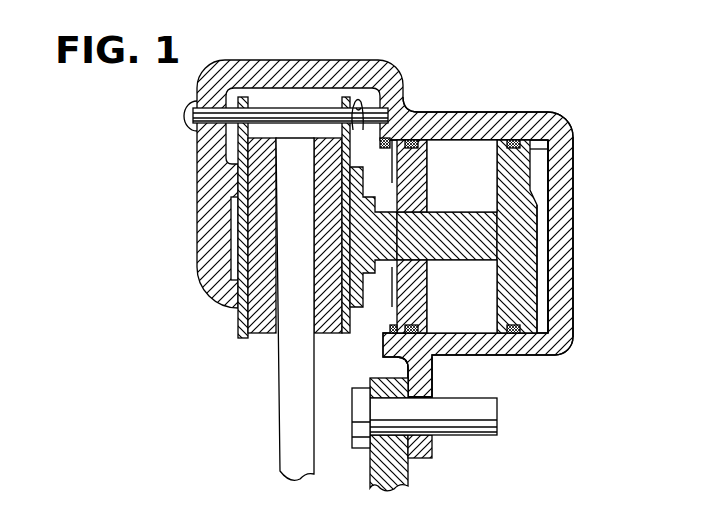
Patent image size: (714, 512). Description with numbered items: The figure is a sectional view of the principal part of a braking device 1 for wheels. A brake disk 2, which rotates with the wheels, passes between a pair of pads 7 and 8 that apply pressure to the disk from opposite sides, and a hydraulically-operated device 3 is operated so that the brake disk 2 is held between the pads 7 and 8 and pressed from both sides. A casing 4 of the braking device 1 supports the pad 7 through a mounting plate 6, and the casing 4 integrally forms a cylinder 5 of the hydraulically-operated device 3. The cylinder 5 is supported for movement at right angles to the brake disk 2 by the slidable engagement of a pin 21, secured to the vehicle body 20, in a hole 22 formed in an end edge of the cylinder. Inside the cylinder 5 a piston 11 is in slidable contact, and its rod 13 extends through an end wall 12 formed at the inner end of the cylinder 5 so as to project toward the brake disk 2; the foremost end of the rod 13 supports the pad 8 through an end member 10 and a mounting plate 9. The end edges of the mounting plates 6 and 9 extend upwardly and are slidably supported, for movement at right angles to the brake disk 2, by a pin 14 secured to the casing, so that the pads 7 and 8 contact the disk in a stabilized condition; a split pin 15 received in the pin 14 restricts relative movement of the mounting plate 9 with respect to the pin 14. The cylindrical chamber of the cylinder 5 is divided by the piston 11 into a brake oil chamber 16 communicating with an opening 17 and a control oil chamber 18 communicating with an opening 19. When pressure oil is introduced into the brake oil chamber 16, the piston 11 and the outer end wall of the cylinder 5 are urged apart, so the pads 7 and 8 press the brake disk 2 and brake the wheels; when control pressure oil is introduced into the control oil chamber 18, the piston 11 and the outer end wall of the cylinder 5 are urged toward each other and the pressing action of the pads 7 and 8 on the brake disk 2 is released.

The braking device 1 is at (328, 57).
The brake disk 2 is at (282, 392).
The hydraulically-operated device 3 is at (514, 108).
The casing 4 is at (400, 82).
The cylinder 5 is at (562, 224).
The mounting plate 6 is at (240, 323).
The pad 7 is at (257, 333).
The pad 8 is at (326, 333).
The mounting plate 9 is at (351, 333).
The end member 10 is at (359, 308).
The piston 11 is at (507, 157).
The end wall 12 is at (415, 168).
The rod 13 is at (485, 220).
The pin 14 is at (293, 118).
The split pin 15 is at (360, 130).
The brake oil chamber 16 is at (540, 298).
The opening 17 is at (551, 151).
The control oil chamber 18 is at (479, 309).
The opening 19 is at (443, 335).
The vehicle body 20 is at (376, 468).
The pin 21 is at (497, 413).
The hole 22 is at (424, 428).